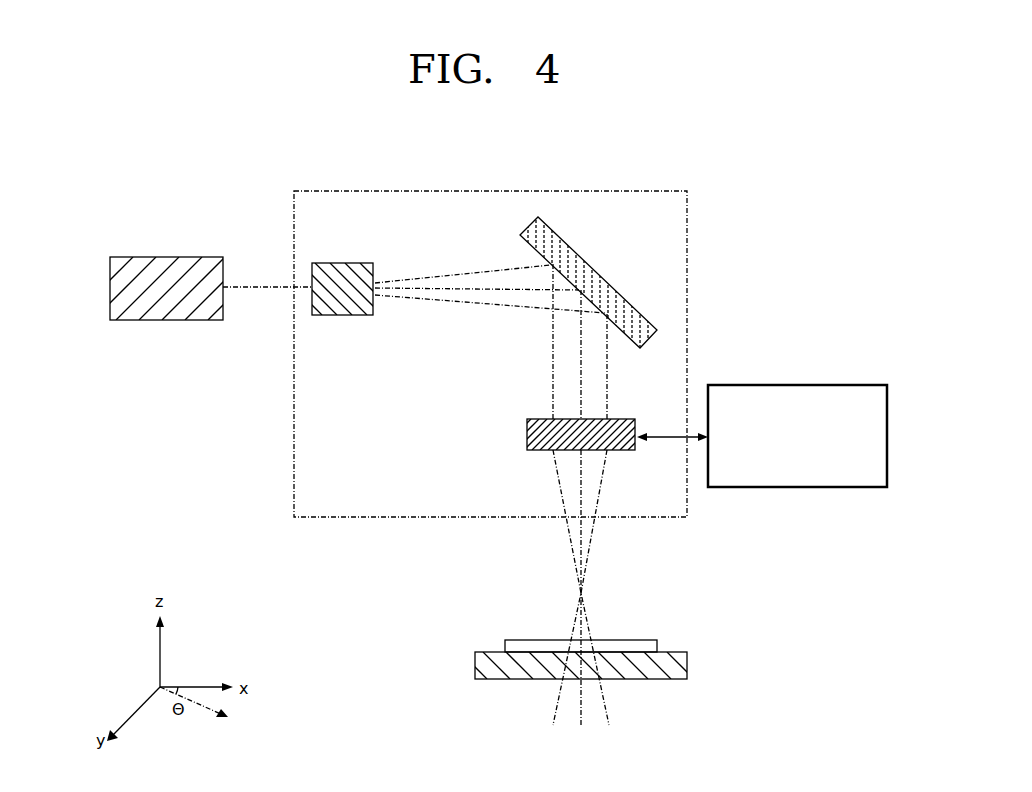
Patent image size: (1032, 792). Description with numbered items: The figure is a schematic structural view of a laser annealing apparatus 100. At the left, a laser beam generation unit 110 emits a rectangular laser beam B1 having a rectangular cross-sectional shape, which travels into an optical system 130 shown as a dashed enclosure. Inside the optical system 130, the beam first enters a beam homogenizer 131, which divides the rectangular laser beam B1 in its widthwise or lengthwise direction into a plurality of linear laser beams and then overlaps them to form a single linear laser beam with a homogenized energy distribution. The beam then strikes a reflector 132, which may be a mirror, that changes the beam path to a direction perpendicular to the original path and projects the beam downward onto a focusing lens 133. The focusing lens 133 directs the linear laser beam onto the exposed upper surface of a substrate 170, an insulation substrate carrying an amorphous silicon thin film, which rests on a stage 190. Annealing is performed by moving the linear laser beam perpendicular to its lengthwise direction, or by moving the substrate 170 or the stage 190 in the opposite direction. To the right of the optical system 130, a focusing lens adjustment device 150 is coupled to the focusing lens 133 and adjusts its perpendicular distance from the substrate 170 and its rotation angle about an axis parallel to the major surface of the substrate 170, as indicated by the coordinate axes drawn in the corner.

The laser annealing apparatus 100 is at (186, 180).
The laser beam generation unit 110 is at (165, 321).
The rectangular laser beam B1 is at (268, 278).
The optical system 130 is at (490, 191).
The beam homogenizer 131 is at (343, 316).
The reflector 132 is at (598, 276).
The focusing lens 133 is at (527, 435).
The focusing lens adjustment device 150 is at (797, 385).
The substrate 170 is at (657, 648).
The stage 190 is at (688, 666).